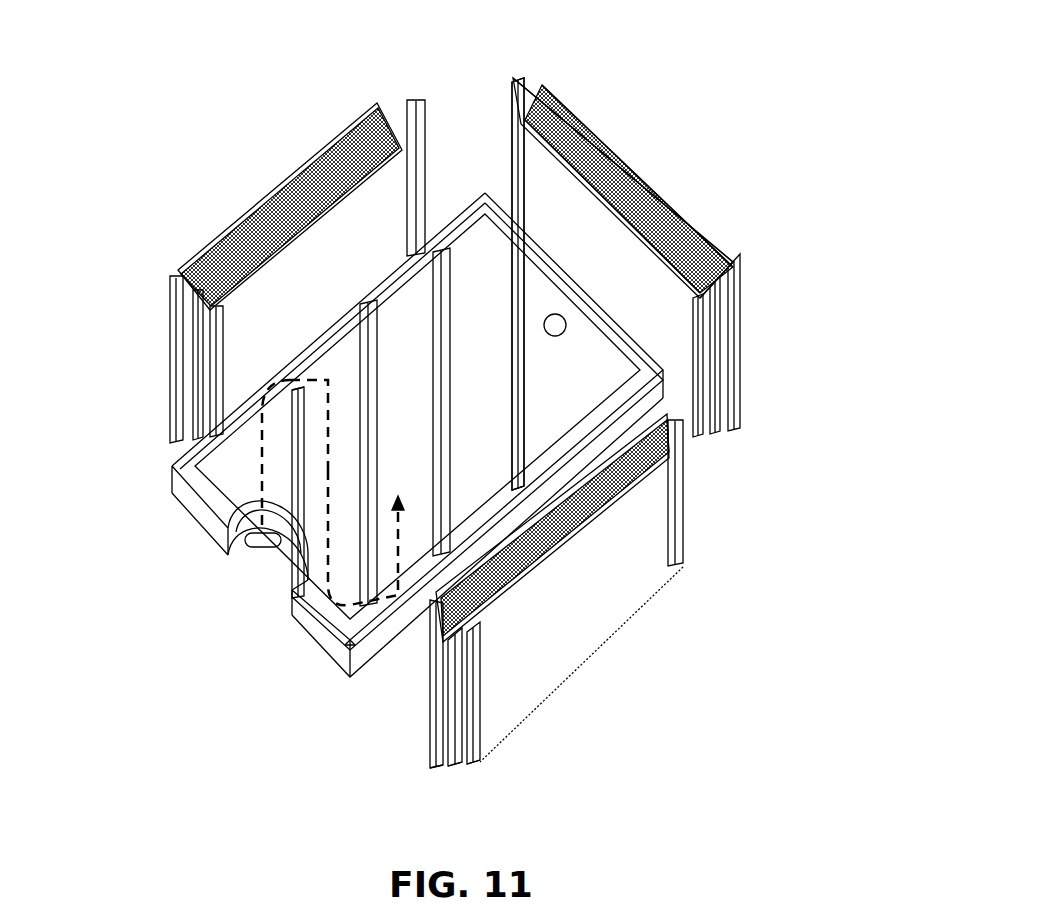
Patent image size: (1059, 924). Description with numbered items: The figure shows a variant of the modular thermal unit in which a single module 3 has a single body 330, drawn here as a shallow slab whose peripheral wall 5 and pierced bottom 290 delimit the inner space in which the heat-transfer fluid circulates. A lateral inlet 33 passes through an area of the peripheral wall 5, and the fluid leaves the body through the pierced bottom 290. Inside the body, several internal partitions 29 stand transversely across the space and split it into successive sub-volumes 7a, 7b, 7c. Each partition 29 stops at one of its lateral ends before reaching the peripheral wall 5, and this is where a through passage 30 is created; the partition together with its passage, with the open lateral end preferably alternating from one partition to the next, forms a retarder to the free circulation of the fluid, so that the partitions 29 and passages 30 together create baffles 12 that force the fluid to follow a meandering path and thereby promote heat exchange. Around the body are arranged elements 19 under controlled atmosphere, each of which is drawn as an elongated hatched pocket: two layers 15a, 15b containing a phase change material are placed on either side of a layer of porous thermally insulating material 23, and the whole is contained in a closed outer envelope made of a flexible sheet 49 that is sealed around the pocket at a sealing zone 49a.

The module 3 is at (338, 696).
The peripheral wall 5 is at (373, 628).
The sub-volume 7a is at (262, 482).
The sub-volume 7b is at (320, 583).
The sub-volume 7c is at (410, 372).
The baffle 12 is at (297, 380).
The layer containing PCM 15a is at (580, 178).
The layer containing PCM 15b is at (652, 190).
The pocket under controlled atmosphere 19 is at (293, 162).
The thermally insulating material 23 is at (562, 113).
The internal partition 29 is at (372, 418).
The through passage 30 is at (445, 250).
The inlet 33 is at (258, 541).
The flexible sheet 49 is at (707, 225).
The sealing zone of the flexible sheet 49a is at (442, 766).
The pierced bottom 290 is at (566, 395).
The body 330 is at (186, 553).